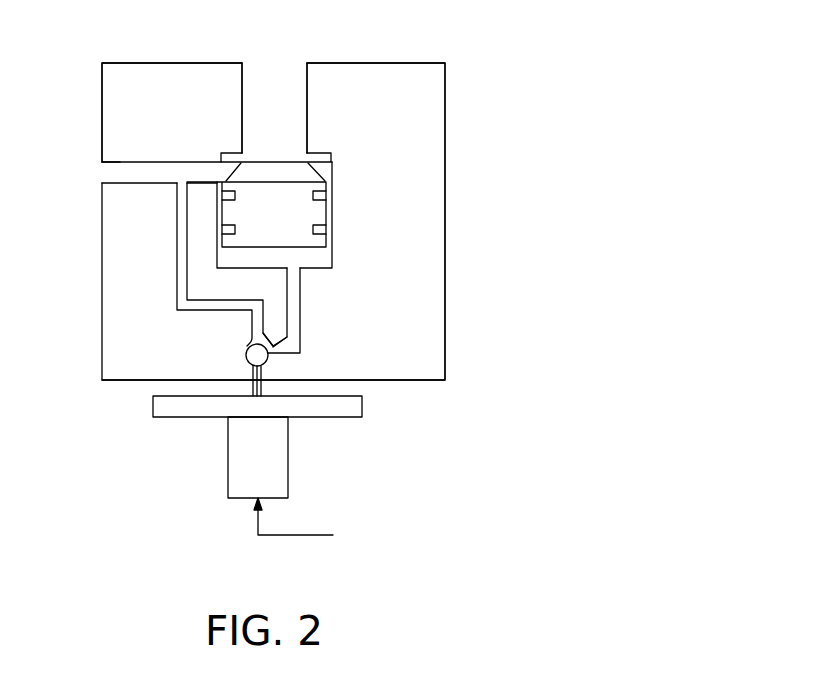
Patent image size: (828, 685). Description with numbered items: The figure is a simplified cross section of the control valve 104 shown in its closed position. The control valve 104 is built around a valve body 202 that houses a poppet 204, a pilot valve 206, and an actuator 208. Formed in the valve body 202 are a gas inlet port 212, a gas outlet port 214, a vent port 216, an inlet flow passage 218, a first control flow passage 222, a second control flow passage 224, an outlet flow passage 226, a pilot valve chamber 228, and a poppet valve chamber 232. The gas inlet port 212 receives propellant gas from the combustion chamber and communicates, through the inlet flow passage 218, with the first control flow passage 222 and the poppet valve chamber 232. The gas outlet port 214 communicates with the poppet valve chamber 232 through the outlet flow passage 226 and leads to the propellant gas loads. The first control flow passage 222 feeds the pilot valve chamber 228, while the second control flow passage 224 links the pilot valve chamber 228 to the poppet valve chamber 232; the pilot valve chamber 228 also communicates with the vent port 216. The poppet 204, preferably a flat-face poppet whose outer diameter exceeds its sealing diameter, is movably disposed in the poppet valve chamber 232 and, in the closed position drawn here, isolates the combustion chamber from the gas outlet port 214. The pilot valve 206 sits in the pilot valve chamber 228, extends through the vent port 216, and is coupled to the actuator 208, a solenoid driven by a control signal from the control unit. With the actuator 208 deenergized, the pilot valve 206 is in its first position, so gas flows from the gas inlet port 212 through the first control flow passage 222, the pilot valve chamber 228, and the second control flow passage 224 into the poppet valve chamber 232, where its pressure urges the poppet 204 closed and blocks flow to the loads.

The control valve 104 is at (493, 63).
The valve body 202 is at (446, 155).
The poppet 204 is at (300, 218).
The pilot valve 206 is at (298, 355).
The actuator 208 is at (280, 455).
The gas inlet port 212 is at (104, 173).
The gas outlet port 214 is at (278, 68).
The vent port 216 is at (250, 387).
The inlet flow passage 218 is at (153, 172).
The first control flow passage 222 is at (183, 253).
The second control flow passage 224 is at (294, 310).
The outlet flow passage 226 is at (300, 118).
The pilot valve chamber 228 is at (247, 343).
The poppet valve chamber 232 is at (326, 257).